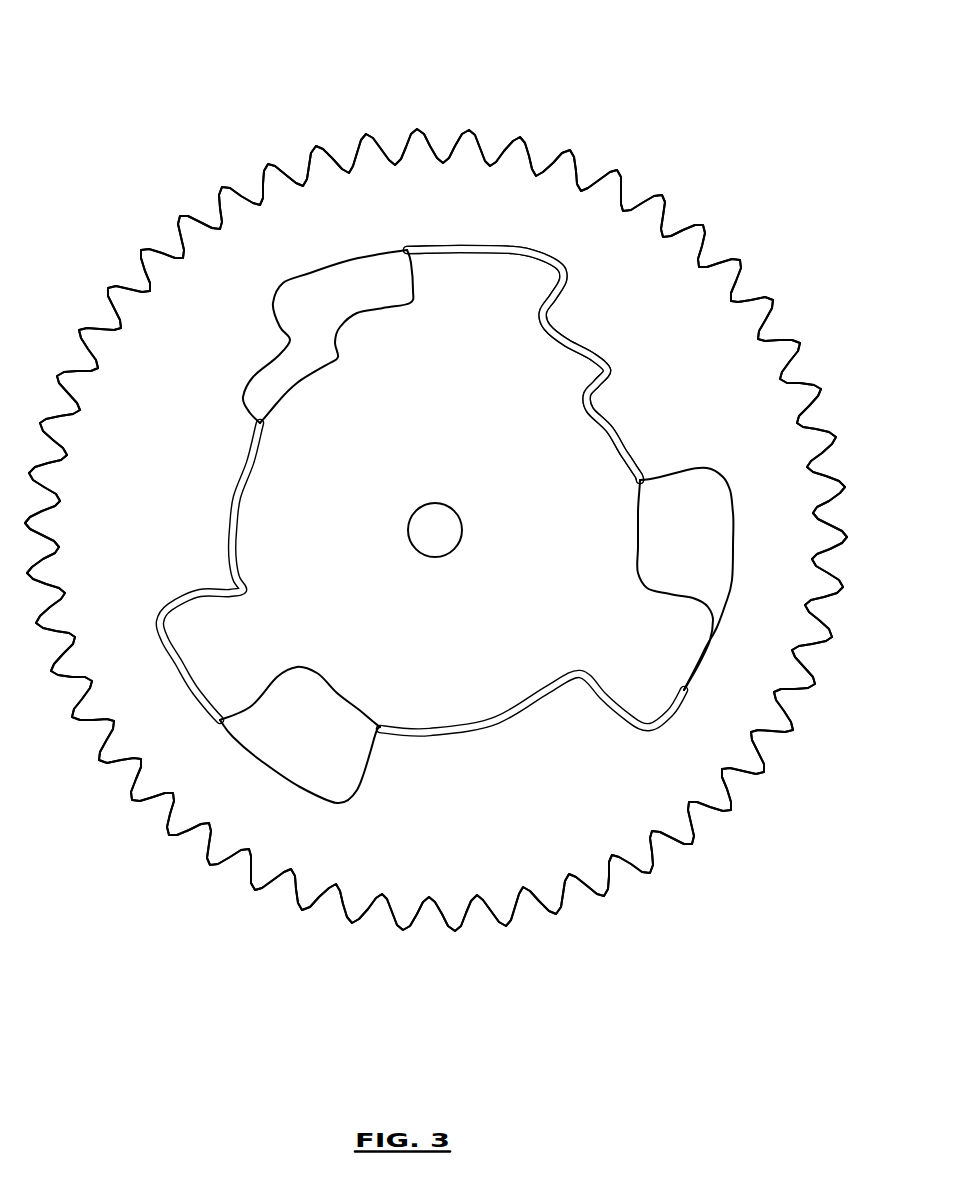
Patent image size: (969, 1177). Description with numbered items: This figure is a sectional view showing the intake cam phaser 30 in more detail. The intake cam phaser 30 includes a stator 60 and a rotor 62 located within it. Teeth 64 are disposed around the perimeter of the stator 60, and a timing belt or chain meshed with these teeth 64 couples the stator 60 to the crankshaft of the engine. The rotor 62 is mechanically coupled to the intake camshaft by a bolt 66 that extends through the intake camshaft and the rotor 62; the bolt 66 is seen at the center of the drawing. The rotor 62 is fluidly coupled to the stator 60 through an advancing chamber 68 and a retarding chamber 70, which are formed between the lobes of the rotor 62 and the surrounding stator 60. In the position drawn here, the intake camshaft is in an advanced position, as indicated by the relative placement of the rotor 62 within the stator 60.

The intake cam phaser 30 is at (220, 84).
The stator 60 is at (647, 323).
The rotor 62 is at (570, 457).
The teeth 64 is at (831, 435).
The bolt 66 is at (438, 535).
The advancing chamber 68 is at (317, 291).
The retarding chamber 70 is at (556, 299).